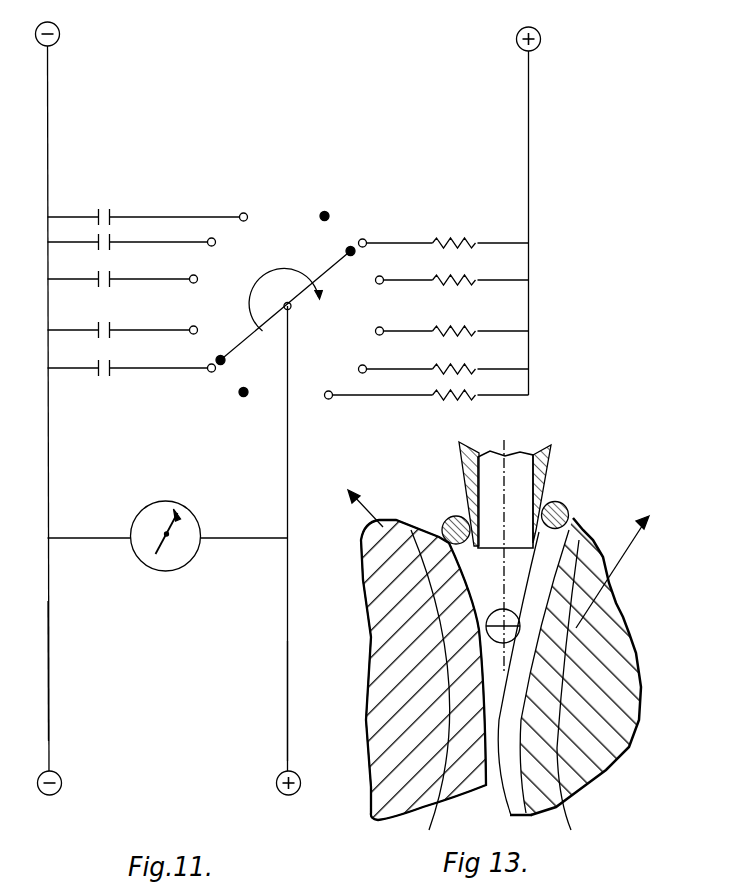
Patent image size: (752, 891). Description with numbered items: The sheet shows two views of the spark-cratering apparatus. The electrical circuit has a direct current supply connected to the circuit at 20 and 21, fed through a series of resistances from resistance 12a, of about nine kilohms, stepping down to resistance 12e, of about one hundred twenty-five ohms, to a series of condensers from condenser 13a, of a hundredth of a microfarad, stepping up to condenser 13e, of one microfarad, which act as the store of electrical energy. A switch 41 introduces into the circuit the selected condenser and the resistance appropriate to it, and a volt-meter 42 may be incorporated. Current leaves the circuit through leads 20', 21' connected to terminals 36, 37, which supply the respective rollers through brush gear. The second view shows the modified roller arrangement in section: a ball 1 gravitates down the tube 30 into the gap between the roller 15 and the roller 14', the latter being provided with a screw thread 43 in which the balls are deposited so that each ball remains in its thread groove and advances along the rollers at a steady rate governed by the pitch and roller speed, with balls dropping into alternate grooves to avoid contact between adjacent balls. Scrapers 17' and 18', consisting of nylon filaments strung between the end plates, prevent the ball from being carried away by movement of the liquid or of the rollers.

In FIG. 11, the supply connection 21 is at (64, 46).
In FIG. 11, the supply connection 20 is at (506, 55).
In FIG. 11, the condenser 13e is at (101, 208).
In FIG. 11, the condenser 13a is at (103, 375).
In FIG. 11, the resistance 12a is at (432, 240).
In FIG. 11, the resistance 12e is at (446, 398).
In FIG. 11, the switch 41 is at (293, 320).
In FIG. 11, the volt-meter 42 is at (190, 558).
In FIG. 11, the lead 21' is at (74, 671).
In FIG. 11, the lead 20' is at (259, 701).
In FIG. 11, the terminal 37 is at (62, 783).
In FIG. 11, the terminal 36 is at (276, 783).
In FIG. 13, the tube 30 is at (463, 461).
In FIG. 13, the scraper 18' is at (443, 517).
In FIG. 13, the scraper 17' is at (568, 499).
In FIG. 13, the screw thread 43 is at (570, 513).
In FIG. 13, the roller 14' is at (587, 673).
In FIG. 13, the roller 15 is at (378, 674).
In FIG. 13, the ball 1 is at (487, 598).